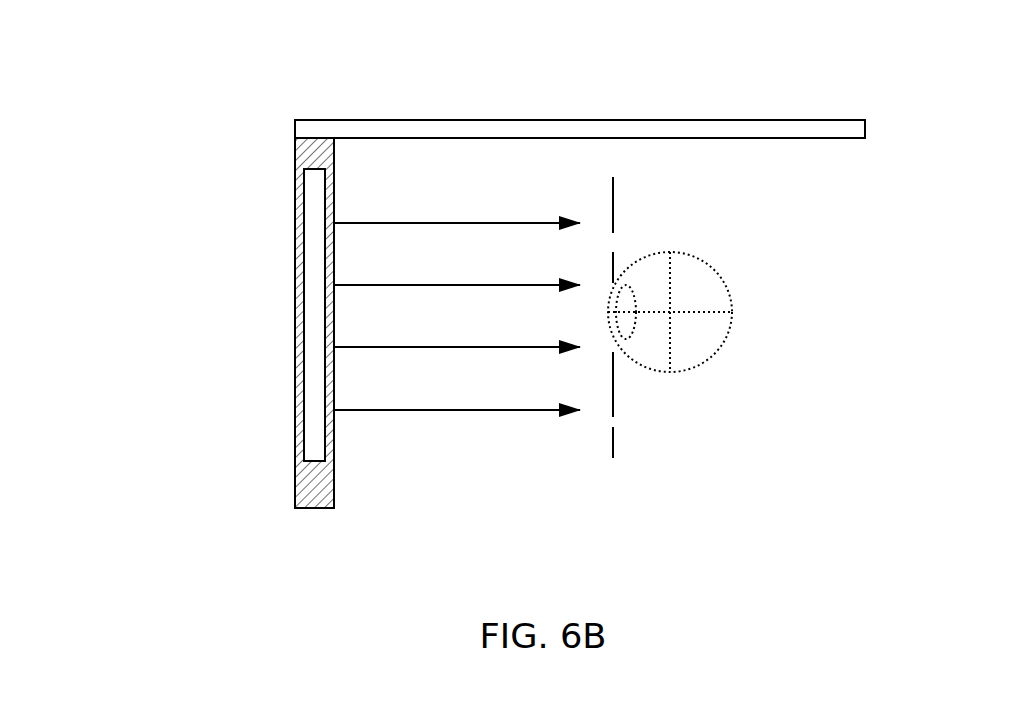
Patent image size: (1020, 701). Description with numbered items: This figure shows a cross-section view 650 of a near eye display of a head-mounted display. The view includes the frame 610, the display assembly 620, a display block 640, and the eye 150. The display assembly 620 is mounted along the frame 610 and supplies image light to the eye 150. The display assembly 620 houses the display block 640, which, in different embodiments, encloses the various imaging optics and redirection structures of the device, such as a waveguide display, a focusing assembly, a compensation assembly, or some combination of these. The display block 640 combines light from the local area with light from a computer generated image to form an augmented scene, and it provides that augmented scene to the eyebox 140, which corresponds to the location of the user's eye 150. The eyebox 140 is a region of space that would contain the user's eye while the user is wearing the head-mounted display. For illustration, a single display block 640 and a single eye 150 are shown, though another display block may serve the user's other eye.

The cross-section view 650 is at (85, 77).
The frame 610 is at (792, 120).
The display assembly 620 is at (295, 392).
The display block 640 is at (318, 222).
The eye 150 is at (710, 267).
The eyebox 140 is at (615, 425).